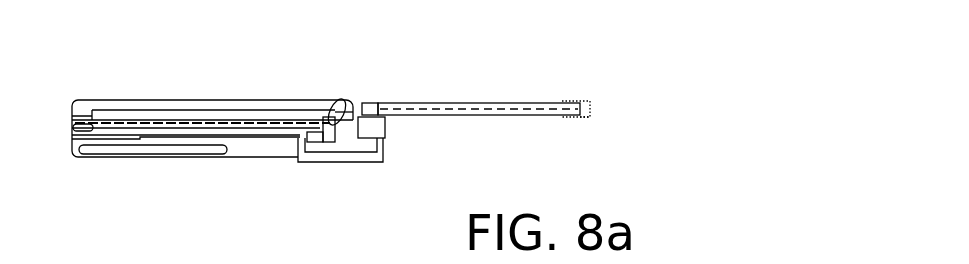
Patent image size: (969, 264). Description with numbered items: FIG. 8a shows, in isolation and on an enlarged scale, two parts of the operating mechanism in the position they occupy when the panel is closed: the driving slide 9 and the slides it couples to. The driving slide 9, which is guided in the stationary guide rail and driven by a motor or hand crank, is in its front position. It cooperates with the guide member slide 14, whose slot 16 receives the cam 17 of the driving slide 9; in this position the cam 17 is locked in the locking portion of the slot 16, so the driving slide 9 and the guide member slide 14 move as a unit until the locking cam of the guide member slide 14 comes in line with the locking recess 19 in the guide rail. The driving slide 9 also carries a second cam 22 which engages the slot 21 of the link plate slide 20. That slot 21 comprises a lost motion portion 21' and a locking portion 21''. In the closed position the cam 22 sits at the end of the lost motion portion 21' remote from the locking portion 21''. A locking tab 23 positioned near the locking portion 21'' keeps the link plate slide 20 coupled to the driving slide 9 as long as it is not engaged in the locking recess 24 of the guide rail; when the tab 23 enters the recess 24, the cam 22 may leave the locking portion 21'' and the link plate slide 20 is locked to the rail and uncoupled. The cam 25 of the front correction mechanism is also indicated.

The driving slide 9 is at (377, 125).
The guide member slide 14 is at (548, 102).
The slot 16 is at (467, 108).
The cam 17 is at (365, 100).
The locking recess 19 is at (583, 118).
The link plate slide 20 is at (110, 105).
The slot 21 is at (202, 84).
The lost motion portion 21' is at (186, 168).
The locking portion 21'' is at (200, 171).
The cam 22 is at (83, 128).
The locking tab 23 is at (313, 135).
The locking recess 24 is at (348, 158).
The cam 25 is at (338, 112).